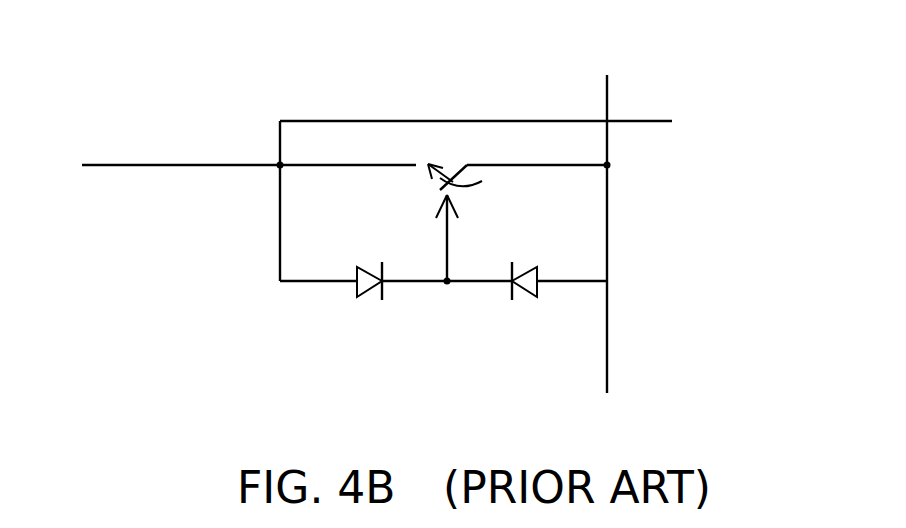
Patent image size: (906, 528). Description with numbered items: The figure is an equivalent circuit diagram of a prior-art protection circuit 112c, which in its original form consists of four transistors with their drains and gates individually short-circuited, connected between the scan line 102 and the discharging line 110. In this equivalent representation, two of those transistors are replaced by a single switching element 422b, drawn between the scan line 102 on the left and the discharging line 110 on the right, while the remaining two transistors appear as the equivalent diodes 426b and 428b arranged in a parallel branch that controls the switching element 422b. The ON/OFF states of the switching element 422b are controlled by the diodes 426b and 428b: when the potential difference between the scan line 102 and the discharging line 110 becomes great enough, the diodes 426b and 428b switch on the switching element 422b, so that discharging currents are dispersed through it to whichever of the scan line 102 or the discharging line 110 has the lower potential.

The protection circuit 112c is at (92, 72).
The scan line 102 is at (153, 166).
The switching element 422b is at (452, 160).
The equivalent diode 426b is at (372, 293).
The equivalent diode 428b is at (523, 293).
The discharging line 110 is at (608, 371).